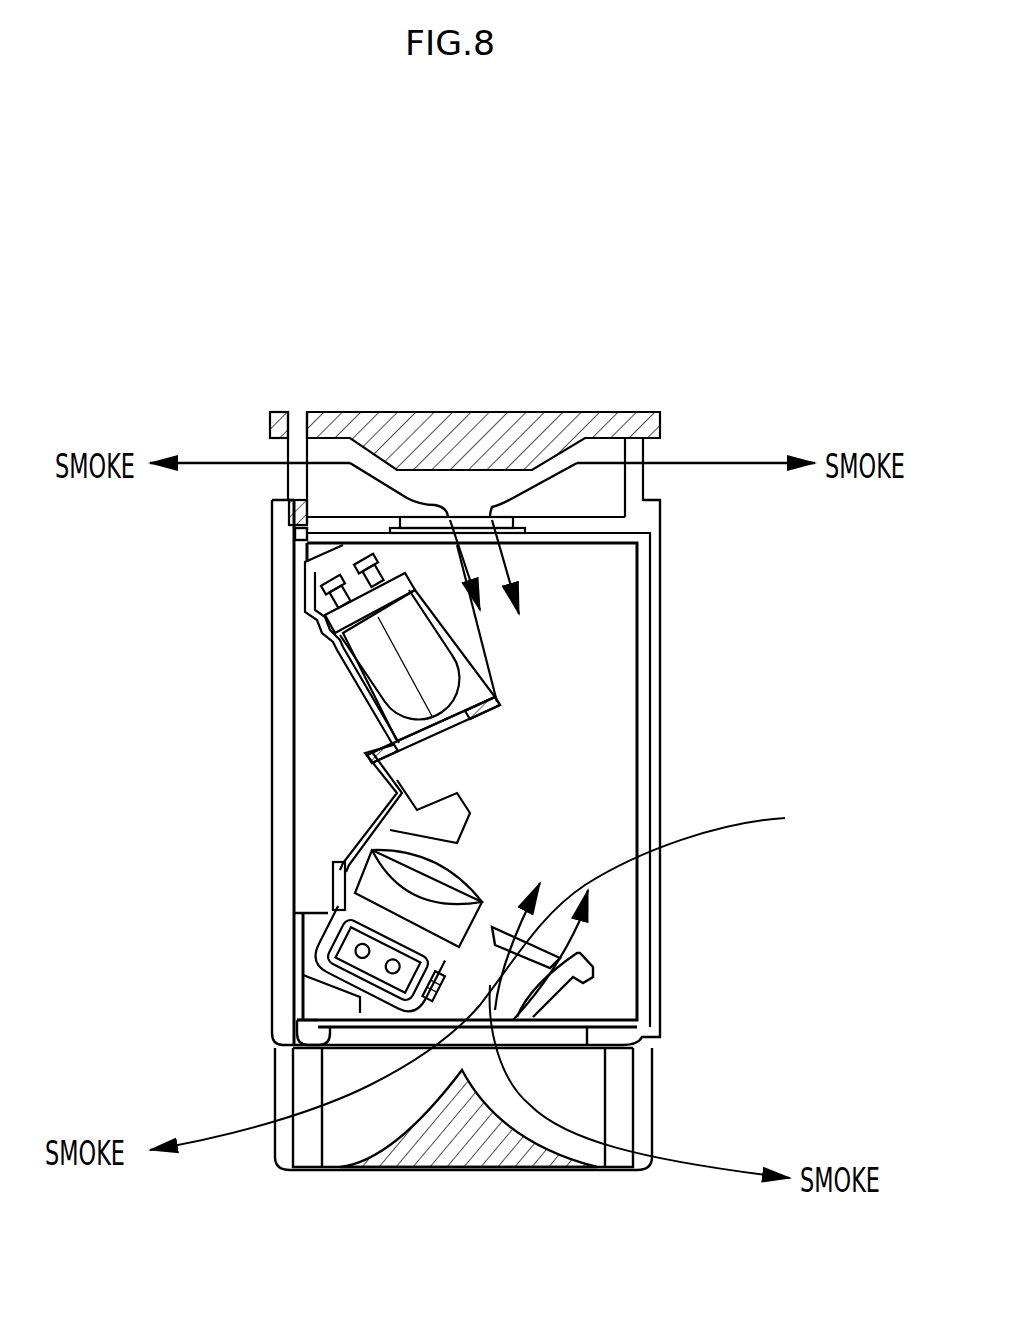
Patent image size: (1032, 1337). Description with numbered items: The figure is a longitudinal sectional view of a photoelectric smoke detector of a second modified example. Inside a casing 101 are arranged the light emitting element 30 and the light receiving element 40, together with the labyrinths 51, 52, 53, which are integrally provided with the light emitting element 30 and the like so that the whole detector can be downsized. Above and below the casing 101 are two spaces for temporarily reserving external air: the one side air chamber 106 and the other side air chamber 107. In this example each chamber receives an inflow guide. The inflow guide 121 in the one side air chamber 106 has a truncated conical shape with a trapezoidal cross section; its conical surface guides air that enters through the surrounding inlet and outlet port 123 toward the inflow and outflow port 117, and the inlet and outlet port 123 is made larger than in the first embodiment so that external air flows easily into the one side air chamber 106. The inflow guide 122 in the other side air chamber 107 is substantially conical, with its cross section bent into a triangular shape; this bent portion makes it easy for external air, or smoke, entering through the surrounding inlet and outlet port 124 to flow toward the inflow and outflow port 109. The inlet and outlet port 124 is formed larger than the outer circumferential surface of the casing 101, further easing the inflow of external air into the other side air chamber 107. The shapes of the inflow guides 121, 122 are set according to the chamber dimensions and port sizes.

The light emitting element 30 is at (372, 648).
The light receiving element 40 is at (413, 980).
The labyrinth 51 is at (593, 970).
The labyrinth 52 is at (785, 818).
The labyrinth 53 is at (610, 1037).
The casing 101 is at (660, 753).
The one side air chamber 106 is at (445, 485).
The other side air chamber 107 is at (577, 1085).
The inflow and outflow port 109 is at (383, 1037).
The inflow and outflow port 117 is at (465, 525).
The inflow guide 121 is at (560, 455).
The inflow guide 122 is at (433, 1107).
The inlet and outlet port 123 is at (632, 485).
The inlet and outlet port 124 is at (622, 1115).